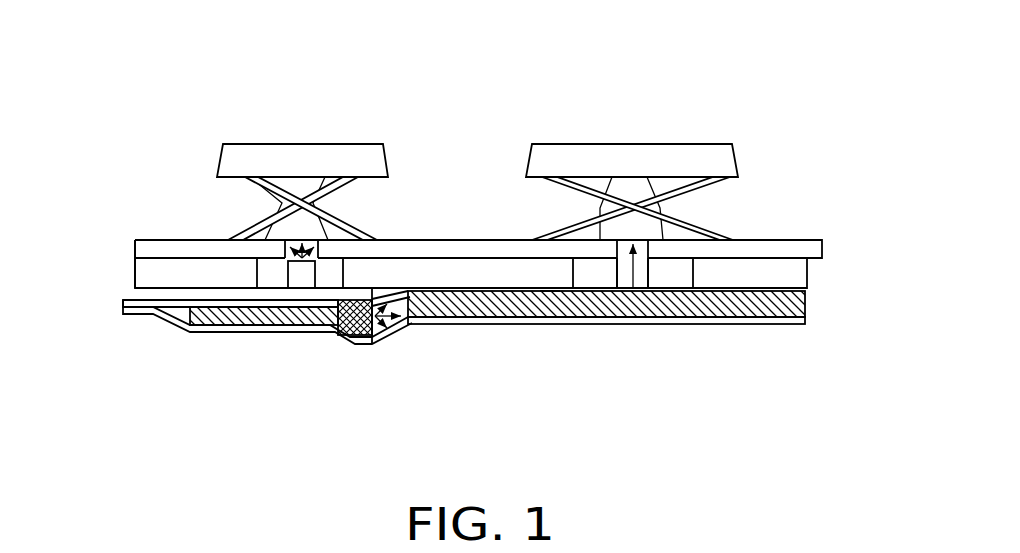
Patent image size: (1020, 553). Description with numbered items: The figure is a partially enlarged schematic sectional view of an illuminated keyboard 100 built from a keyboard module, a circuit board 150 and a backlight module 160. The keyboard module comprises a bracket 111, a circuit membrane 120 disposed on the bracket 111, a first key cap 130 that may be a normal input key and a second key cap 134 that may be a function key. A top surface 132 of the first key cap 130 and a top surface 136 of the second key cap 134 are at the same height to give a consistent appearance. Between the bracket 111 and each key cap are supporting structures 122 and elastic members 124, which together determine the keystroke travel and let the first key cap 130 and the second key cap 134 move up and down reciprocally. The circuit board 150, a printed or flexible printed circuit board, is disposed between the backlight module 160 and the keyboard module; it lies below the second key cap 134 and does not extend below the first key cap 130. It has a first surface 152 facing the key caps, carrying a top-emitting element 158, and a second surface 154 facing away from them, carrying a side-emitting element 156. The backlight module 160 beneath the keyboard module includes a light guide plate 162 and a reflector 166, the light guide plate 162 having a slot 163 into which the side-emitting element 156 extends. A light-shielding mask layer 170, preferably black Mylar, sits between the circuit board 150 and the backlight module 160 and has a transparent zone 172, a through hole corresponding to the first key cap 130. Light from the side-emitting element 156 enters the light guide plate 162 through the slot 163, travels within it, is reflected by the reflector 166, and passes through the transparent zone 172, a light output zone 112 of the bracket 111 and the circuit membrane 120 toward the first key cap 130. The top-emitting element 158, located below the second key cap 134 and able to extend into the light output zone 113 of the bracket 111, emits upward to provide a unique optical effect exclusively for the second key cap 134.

The illuminated keyboard 100 is at (79, 70).
The bracket 111 is at (133, 270).
The light output zone 112 is at (667, 270).
The light output zone 113 is at (277, 268).
The circuit membrane 120 is at (158, 248).
The supporting structure 122 is at (690, 185).
The elastic member 124 is at (627, 186).
The first key cap 130 is at (570, 148).
The top surface 132 is at (632, 143).
The second key cap 134 is at (240, 150).
The top surface 136 is at (287, 143).
The circuit board 150 is at (216, 301).
The first surface 152 is at (216, 287).
The second surface 154 is at (191, 312).
The side-emitting element 156 is at (361, 337).
The top-emitting element 158 is at (305, 273).
The backlight module 160 is at (652, 330).
The light guide plate 162 is at (805, 307).
The slot 163 is at (328, 322).
The reflector 166 is at (805, 326).
The mask layer 170 is at (547, 292).
The transparent zone 172 is at (632, 291).